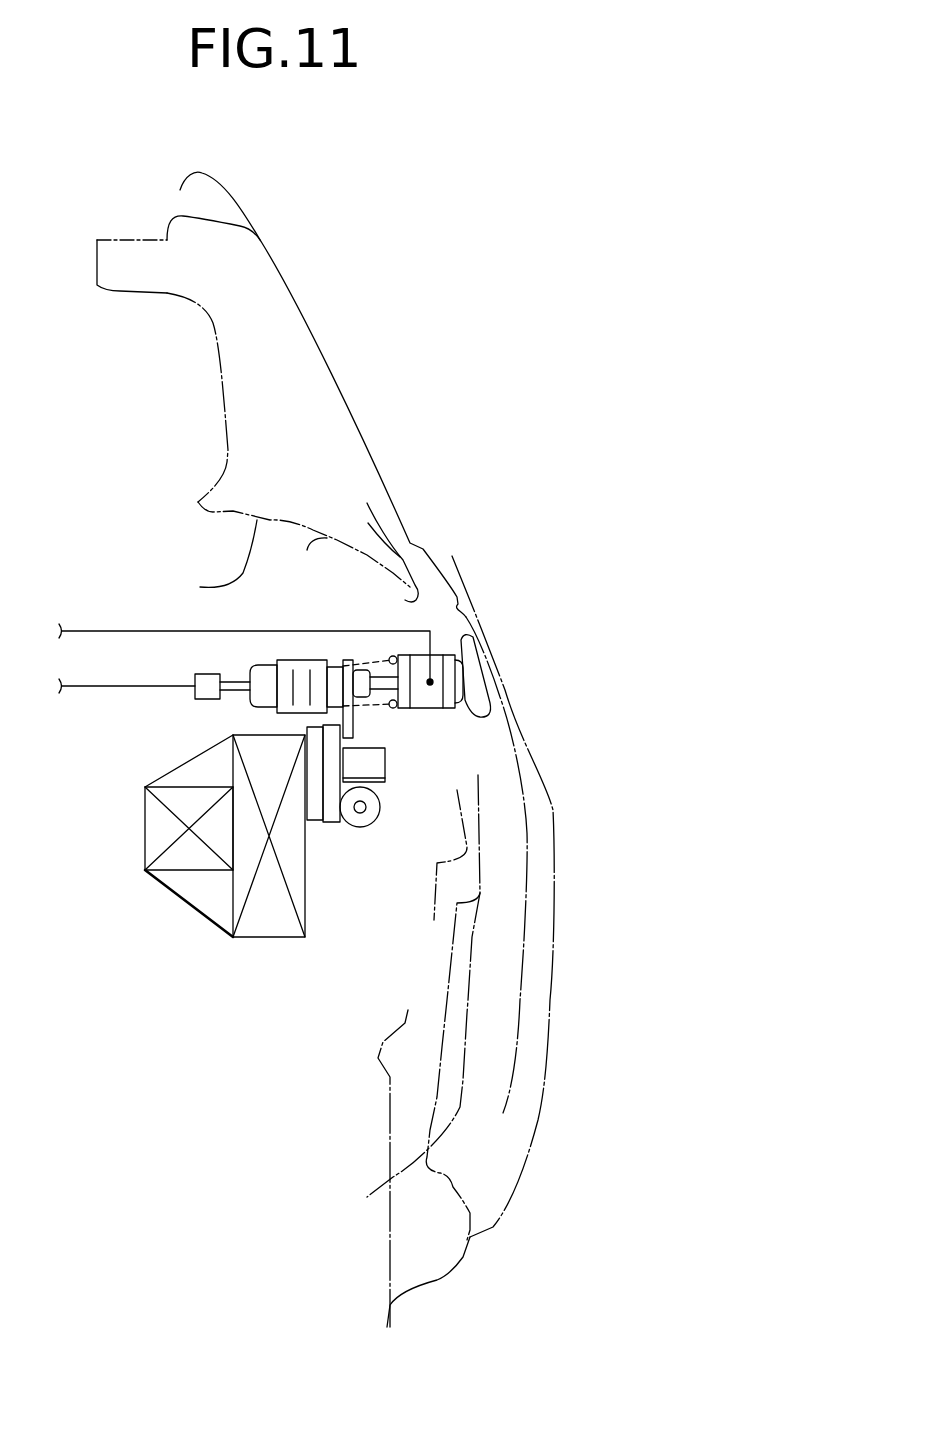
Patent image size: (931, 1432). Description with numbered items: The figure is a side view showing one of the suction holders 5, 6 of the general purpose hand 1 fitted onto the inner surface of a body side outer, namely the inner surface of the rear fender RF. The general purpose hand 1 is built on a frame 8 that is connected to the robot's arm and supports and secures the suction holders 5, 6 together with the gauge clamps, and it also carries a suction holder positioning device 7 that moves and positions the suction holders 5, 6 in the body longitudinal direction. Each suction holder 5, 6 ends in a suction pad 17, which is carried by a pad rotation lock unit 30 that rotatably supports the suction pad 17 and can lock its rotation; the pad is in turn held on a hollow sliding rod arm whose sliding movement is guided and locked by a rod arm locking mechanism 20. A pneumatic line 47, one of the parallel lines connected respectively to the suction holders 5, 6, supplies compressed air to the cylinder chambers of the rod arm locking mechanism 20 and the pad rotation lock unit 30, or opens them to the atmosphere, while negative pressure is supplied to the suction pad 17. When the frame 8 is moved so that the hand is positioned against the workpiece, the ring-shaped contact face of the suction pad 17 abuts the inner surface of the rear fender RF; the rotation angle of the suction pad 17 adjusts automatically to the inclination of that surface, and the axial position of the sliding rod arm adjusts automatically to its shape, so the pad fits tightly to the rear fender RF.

The general purpose hand 1 is at (127, 827).
The suction holder 5 is at (570, 467).
The suction holder 6 is at (314, 606).
The suction holder positioning device 7 is at (395, 794).
The frame 8 is at (263, 922).
The suction pad 17 is at (473, 678).
The rod arm locking mechanism 20 is at (340, 648).
The pad rotation lock unit 30 is at (415, 646).
The line 47 is at (83, 630).
The rear fender RF is at (550, 1003).